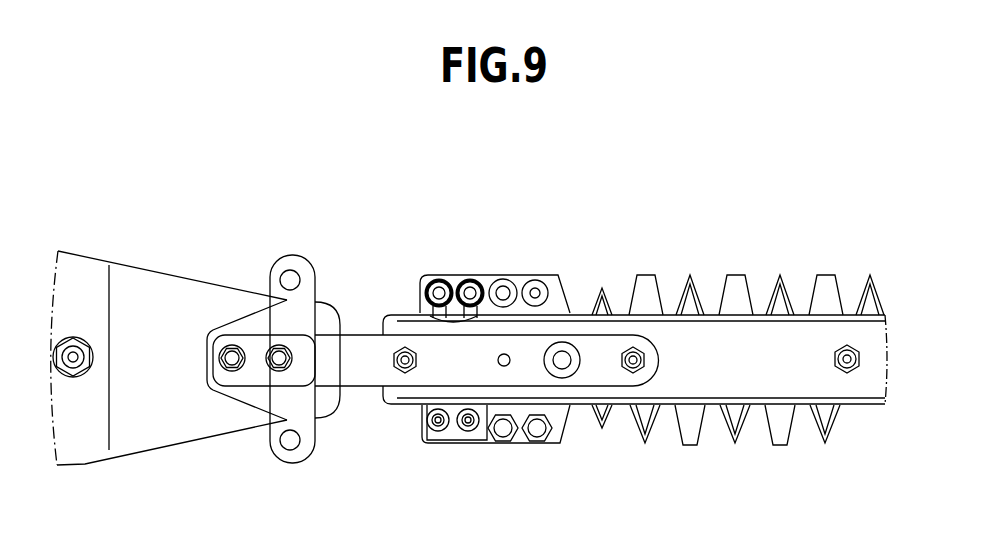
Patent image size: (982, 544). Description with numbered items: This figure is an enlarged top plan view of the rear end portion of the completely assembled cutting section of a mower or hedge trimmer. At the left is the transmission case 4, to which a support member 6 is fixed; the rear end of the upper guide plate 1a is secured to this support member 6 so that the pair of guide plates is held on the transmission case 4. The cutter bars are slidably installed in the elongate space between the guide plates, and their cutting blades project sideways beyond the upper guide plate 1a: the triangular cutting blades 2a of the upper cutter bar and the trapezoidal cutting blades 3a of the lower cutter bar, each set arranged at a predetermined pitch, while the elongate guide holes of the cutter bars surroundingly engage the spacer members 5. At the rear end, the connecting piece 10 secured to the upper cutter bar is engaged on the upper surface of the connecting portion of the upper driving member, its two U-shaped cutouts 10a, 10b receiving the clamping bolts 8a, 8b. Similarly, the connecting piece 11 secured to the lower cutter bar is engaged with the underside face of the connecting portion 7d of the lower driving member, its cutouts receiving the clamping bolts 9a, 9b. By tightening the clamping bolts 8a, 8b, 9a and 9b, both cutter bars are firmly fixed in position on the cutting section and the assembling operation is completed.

The upper guide plate 1a is at (753, 382).
The triangular cutting blades 2a is at (682, 287).
The trapezoidal cutting blades 3a is at (737, 278).
The transmission case 4 is at (184, 287).
The spacer members 5 is at (626, 337).
The support member 6 is at (345, 337).
The connecting portion 7d is at (457, 435).
The clamping bolt 8a is at (483, 278).
The clamping bolt 8b is at (438, 279).
The clamping bolt 9a is at (478, 428).
The clamping bolt 9b is at (443, 430).
The connecting piece 10 is at (470, 279).
The U-shaped cutout 10a is at (475, 316).
The U-shaped cutout 10b is at (430, 316).
The connecting piece 11 is at (420, 431).